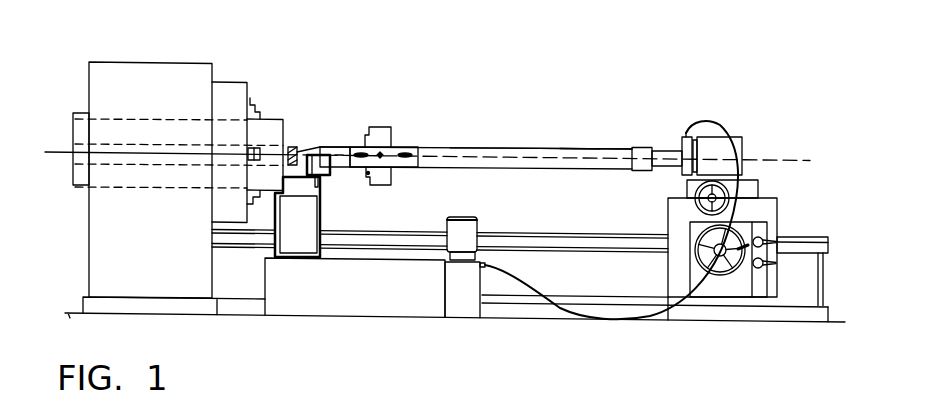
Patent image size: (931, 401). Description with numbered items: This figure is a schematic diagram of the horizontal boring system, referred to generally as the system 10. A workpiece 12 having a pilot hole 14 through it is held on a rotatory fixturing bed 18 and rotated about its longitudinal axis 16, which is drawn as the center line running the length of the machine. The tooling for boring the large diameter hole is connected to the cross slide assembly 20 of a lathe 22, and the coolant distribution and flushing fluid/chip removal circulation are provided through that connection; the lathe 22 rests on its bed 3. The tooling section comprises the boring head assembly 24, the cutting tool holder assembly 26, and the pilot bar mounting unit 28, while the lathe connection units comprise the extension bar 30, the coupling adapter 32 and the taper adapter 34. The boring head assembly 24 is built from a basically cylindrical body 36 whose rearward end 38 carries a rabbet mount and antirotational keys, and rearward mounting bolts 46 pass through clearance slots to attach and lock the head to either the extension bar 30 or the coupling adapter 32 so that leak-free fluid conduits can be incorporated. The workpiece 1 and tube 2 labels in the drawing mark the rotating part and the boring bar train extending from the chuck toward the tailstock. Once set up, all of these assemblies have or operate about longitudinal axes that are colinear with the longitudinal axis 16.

The workpiece 1 is at (358, 150).
The tube 2 is at (521, 149).
The lathe bed 3 is at (310, 297).
The horizontal boring system 10 is at (580, 158).
The workpiece 12 is at (263, 132).
The pilot hole 14 is at (270, 150).
The longitudinal axis 16 is at (797, 158).
The rotatory fixturing bed 18 is at (227, 97).
The cross slide assembly 20 is at (722, 150).
The lathe 22 is at (580, 278).
The boring head assembly 24 is at (415, 152).
The cutting tool holder assembly 26 is at (320, 163).
The pilot bar mounting unit 28 is at (338, 150).
The extension bar 30 is at (605, 155).
The coupling adapter 32 is at (647, 150).
The taper adapter 34 is at (697, 118).
The cylindrical body 36 is at (588, 400).
The rearward end 38 is at (784, 397).
The rearward mounting bolts 46 is at (688, 400).